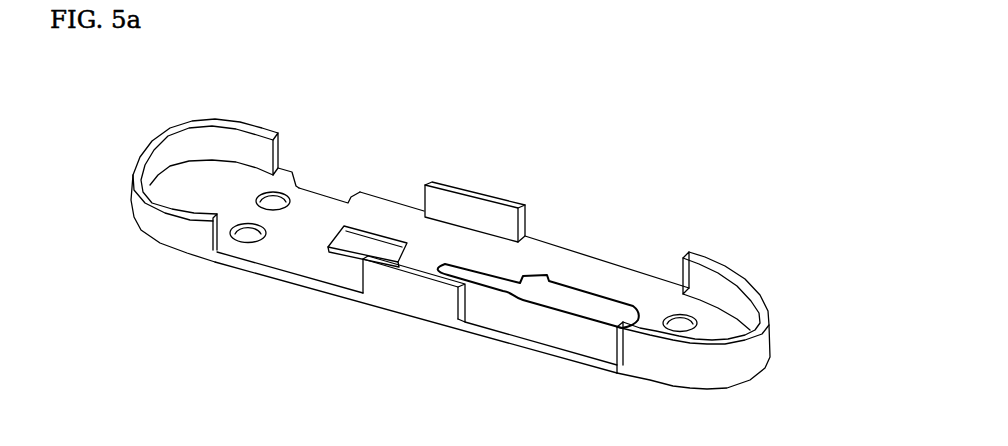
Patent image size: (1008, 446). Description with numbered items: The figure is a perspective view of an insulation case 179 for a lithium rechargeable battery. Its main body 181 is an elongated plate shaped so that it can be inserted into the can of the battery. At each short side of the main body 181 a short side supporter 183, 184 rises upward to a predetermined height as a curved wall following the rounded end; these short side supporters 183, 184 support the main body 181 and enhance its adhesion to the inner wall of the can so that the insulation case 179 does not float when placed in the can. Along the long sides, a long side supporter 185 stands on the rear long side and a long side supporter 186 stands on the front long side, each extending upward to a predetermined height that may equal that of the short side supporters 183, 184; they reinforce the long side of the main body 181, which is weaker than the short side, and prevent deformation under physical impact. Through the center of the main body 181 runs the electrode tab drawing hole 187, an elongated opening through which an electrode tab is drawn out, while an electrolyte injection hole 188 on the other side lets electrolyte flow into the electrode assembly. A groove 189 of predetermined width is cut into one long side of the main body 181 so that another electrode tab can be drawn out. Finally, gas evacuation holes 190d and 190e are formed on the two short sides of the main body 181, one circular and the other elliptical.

The insulation case 179 is at (650, 213).
The main body 181 is at (490, 310).
The short side supporter 183 is at (753, 343).
The short side supporter 184 is at (157, 151).
The long side supporter 185 is at (472, 210).
The long side supporter 186 is at (417, 285).
The electrode tab drawing hole 187 is at (607, 319).
The electrolyte injection hole 188 is at (346, 252).
The groove 189 is at (322, 192).
The gas evacuation hole 190d is at (683, 318).
The gas evacuation hole 190e is at (240, 234).